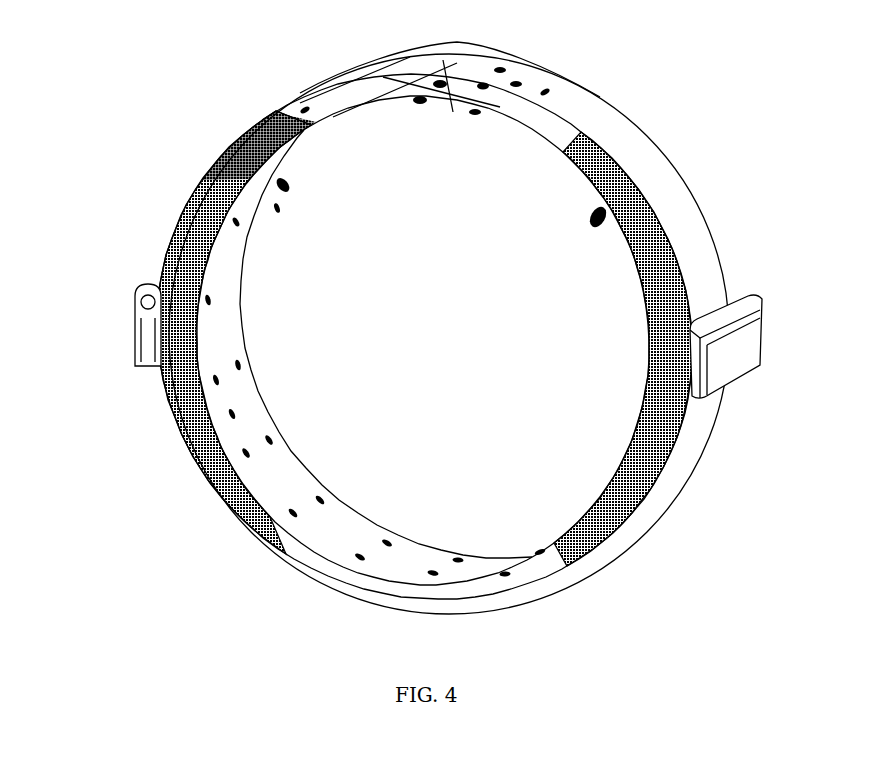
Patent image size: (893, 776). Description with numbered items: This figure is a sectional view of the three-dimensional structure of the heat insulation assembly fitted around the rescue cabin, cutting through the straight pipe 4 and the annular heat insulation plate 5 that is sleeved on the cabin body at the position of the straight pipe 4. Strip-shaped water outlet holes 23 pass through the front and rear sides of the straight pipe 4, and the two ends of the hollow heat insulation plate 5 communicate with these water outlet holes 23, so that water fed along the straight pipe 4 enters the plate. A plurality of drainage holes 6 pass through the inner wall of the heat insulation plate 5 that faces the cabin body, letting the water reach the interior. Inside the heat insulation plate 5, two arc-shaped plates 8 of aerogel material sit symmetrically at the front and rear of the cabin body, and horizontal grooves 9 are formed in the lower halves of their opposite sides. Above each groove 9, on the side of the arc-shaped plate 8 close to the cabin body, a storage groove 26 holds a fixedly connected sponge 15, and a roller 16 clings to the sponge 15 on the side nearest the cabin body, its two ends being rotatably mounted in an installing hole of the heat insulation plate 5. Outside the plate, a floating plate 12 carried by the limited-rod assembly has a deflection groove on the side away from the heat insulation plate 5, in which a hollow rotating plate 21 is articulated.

The straight pipe 4 is at (434, 53).
The heat insulation plate 5 is at (606, 103).
The drainage hole 6 is at (237, 295).
The arc-shaped plate 8 is at (222, 493).
The groove 9 is at (224, 437).
The floating plate 12 is at (136, 288).
The sponge 15 is at (220, 167).
The roller 16 is at (288, 192).
The rotating plate 21 is at (134, 362).
The water outlet hole 23 is at (446, 99).
The storage groove 26 is at (287, 107).